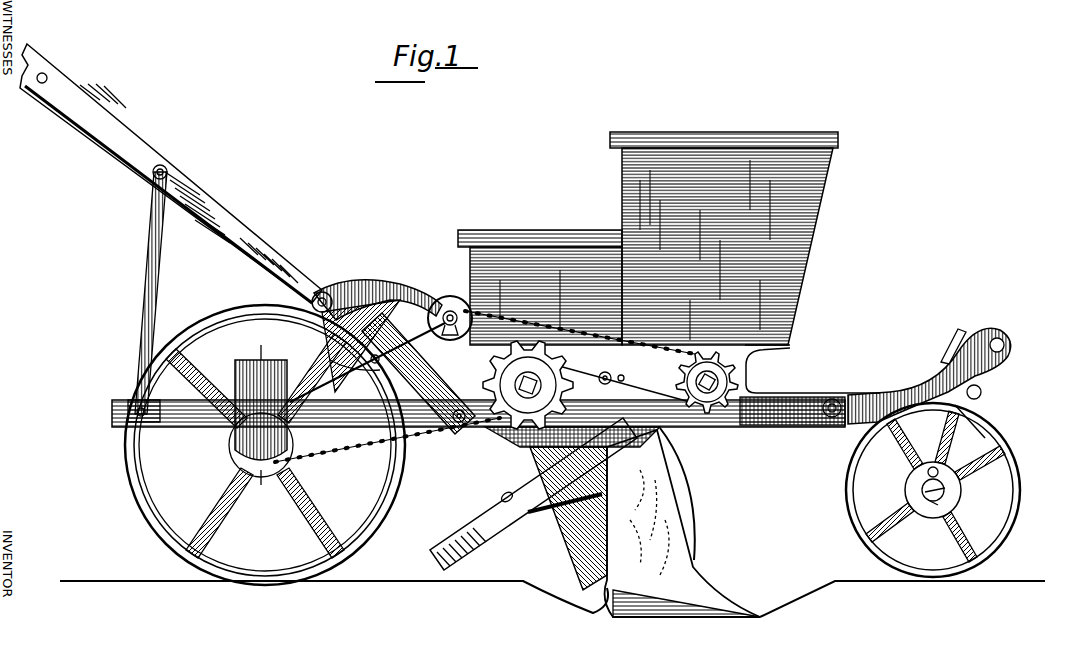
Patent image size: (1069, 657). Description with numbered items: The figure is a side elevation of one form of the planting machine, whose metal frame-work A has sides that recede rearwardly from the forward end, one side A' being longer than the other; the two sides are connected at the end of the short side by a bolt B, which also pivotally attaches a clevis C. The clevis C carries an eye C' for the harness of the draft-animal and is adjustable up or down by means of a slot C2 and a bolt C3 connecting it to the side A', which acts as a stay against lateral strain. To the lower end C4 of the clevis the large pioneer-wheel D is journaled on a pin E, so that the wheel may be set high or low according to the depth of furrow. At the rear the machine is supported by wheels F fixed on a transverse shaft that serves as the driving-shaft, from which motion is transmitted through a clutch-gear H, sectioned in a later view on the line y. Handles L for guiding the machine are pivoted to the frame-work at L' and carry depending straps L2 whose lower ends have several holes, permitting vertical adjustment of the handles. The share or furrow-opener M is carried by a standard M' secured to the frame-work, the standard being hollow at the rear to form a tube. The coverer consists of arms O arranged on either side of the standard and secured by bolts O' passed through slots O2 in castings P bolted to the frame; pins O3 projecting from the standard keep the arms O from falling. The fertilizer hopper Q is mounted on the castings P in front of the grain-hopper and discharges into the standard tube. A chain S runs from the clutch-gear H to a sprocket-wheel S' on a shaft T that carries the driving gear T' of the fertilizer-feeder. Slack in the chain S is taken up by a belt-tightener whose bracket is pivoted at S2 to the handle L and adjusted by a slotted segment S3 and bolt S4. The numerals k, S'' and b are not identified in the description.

The handles L is at (171, 173).
The depending straps L2 is at (150, 295).
The handle pivot L' is at (418, 389).
The wheels F is at (150, 512).
The hub box k is at (240, 380).
The clutch-gear H is at (240, 455).
The section line y y is at (267, 417).
The frame-work A is at (478, 424).
The long side of frame A' is at (792, 426).
The fertilizer hopper Q is at (648, 238).
The chain S is at (450, 308).
The sprocket-wheel S' is at (378, 291).
The bracket pivot S2 is at (328, 292).
The slotted segment S3 is at (361, 347).
The bolt S4 is at (395, 345).
The driven sprocket S'' is at (707, 399).
The castings P is at (575, 383).
The drive chain b is at (508, 340).
The shaft T is at (739, 370).
The driving gear T' is at (779, 355).
The bolt B is at (838, 398).
The clevis C is at (929, 376).
The eye C' is at (1010, 348).
The slot C2 is at (965, 380).
The bolt C3 is at (982, 402).
The lower end of clevis C4 is at (990, 440).
The pioneer-wheel D is at (1035, 512).
The pin E is at (960, 493).
The share M is at (682, 523).
The standard M' is at (621, 509).
The coverer arms O is at (533, 494).
The bolts O' is at (577, 453).
The slots O2 is at (627, 390).
The pins O3 is at (535, 514).